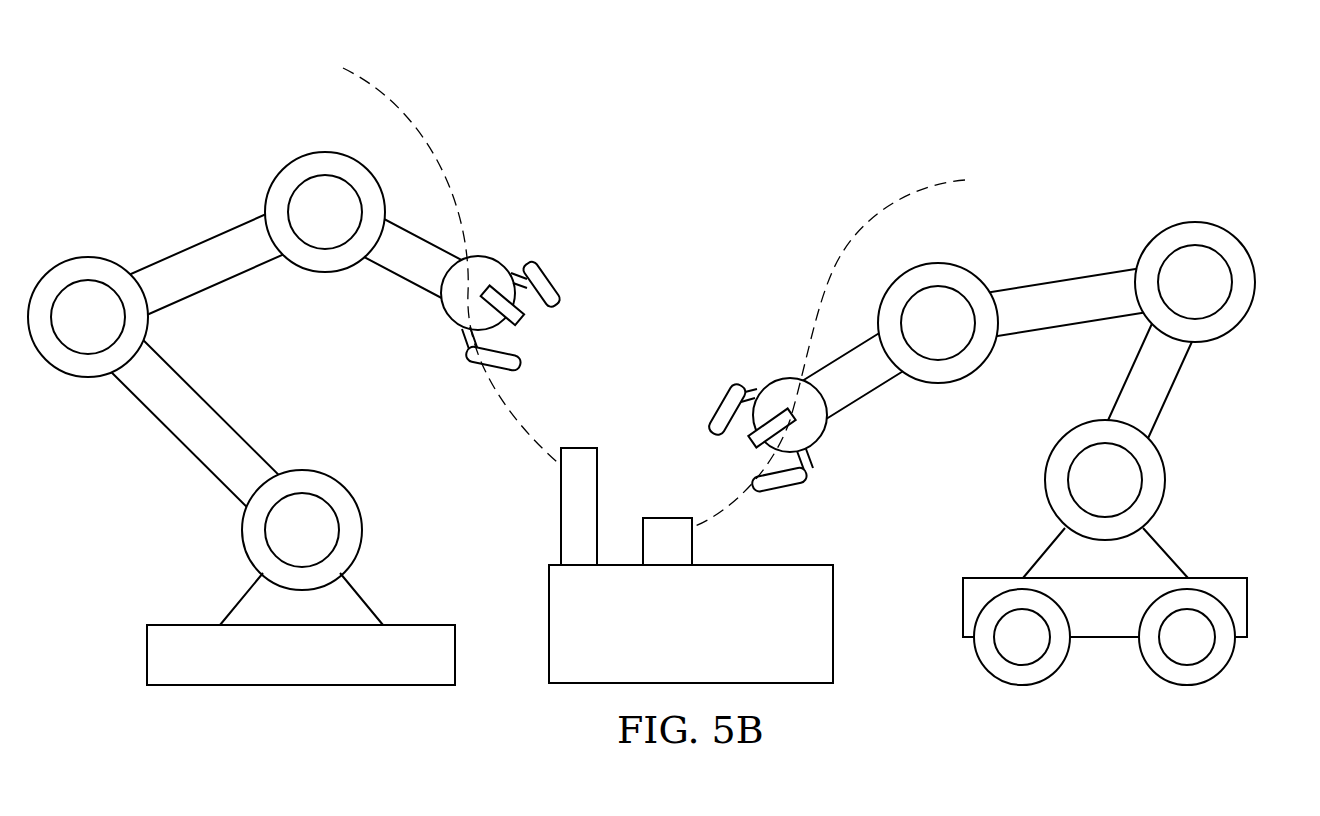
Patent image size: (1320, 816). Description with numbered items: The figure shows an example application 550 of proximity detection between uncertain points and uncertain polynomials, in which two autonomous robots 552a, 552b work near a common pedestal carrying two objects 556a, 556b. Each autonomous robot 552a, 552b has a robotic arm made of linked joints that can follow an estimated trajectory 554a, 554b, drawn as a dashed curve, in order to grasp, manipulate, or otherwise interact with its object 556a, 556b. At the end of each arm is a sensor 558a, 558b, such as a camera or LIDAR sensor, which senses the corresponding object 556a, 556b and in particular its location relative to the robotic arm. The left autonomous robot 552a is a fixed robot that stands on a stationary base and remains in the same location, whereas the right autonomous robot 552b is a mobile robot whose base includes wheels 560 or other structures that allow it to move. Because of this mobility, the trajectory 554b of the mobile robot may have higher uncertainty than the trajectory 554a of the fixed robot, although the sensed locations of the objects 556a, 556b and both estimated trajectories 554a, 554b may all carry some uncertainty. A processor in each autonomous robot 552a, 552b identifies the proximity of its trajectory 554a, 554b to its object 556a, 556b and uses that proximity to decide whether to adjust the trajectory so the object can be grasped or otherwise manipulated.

The example application 550 is at (762, 116).
The autonomous robot 552a is at (197, 247).
The autonomous robot 552b is at (1060, 277).
The estimated trajectory 554a is at (453, 107).
The estimated trajectory 554b is at (882, 213).
The object 556a is at (560, 507).
The object 556b is at (667, 517).
The sensor 558a is at (505, 237).
The sensor 558b is at (780, 378).
The wheels 560 is at (1236, 647).